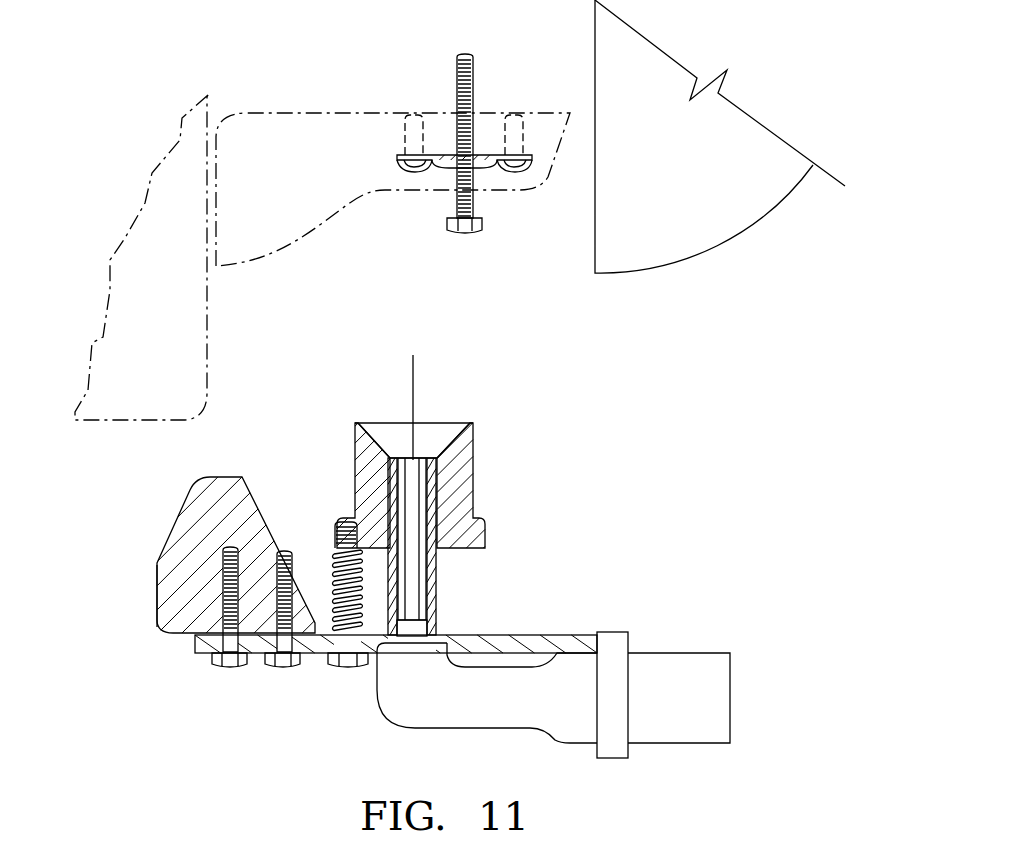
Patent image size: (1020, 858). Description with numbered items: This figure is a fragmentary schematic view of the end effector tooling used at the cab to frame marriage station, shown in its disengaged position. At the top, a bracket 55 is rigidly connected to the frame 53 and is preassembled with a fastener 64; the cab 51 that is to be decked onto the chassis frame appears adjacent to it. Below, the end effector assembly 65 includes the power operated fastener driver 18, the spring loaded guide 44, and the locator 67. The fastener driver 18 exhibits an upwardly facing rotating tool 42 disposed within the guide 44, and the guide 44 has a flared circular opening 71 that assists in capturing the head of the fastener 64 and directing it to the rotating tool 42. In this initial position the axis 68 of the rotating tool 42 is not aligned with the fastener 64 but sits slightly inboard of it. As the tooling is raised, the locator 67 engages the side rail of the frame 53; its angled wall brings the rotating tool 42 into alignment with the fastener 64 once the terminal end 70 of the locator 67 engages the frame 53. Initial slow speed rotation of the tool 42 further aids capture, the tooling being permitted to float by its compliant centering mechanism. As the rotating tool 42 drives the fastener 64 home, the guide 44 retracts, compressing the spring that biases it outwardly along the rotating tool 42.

The power operated fastener driver 18 is at (572, 745).
The rotating tool 42 is at (437, 585).
The spring loaded guide 44 is at (473, 477).
The cab 51 is at (677, 171).
The frame 53 is at (170, 335).
The bracket 55 is at (340, 113).
The fastener 64 is at (473, 203).
The end effector assembly 65 is at (529, 636).
The locator 67 is at (170, 530).
The axis 68 is at (413, 383).
The terminal end 70 is at (157, 596).
The flared circular opening 71 is at (442, 443).